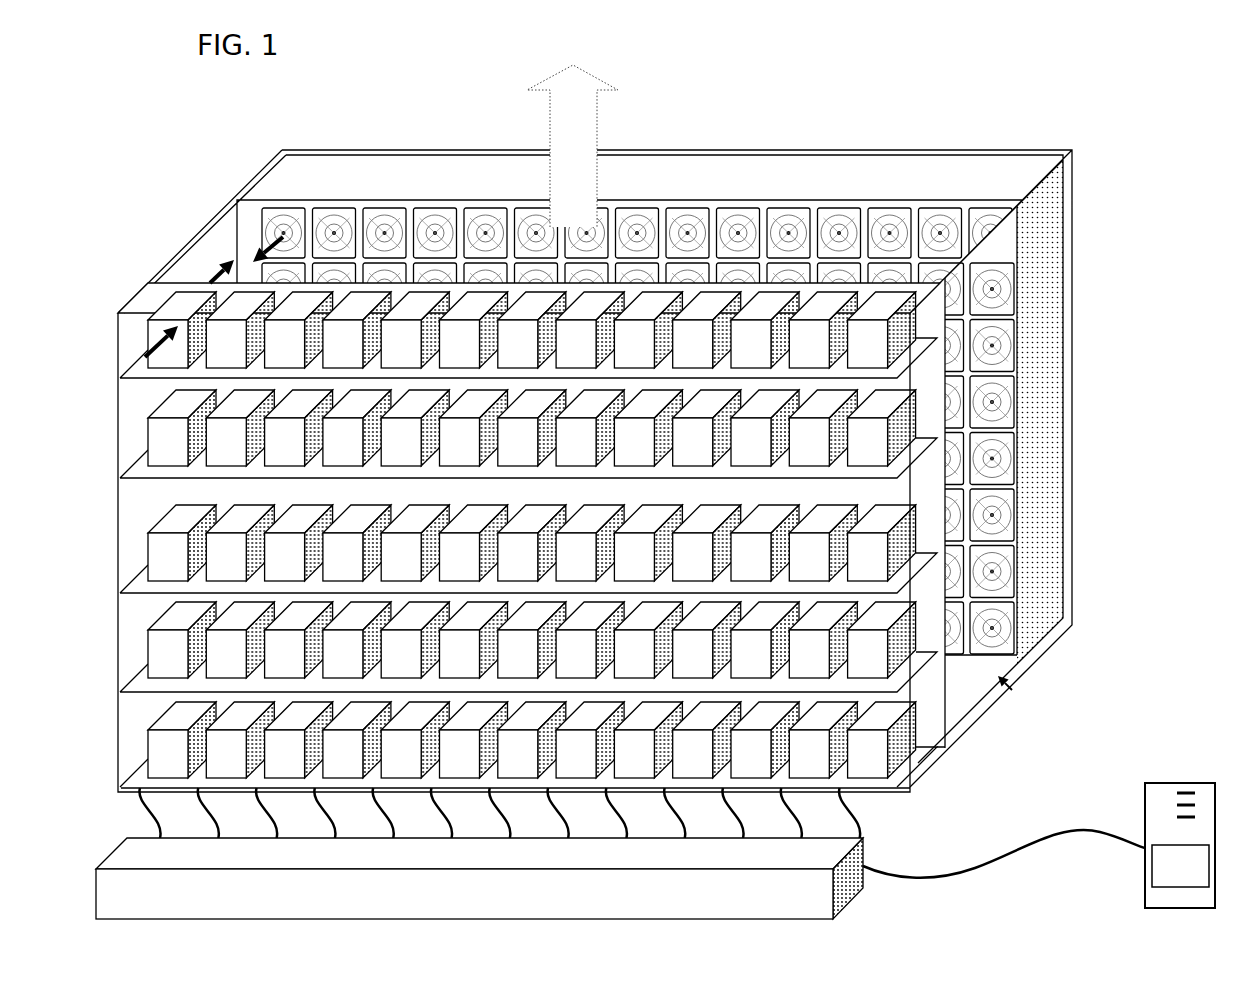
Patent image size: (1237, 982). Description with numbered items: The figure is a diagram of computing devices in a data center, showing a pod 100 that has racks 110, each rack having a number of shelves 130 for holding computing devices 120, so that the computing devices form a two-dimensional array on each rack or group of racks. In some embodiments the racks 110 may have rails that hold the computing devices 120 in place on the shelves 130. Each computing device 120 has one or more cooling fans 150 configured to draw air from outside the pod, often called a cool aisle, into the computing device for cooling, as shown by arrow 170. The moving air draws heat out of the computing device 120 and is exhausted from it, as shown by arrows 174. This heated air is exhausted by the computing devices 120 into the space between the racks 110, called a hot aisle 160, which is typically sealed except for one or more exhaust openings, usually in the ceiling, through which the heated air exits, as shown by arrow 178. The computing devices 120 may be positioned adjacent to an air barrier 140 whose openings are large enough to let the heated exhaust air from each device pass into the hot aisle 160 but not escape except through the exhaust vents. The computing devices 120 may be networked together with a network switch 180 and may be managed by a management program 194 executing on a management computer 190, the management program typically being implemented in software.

The pod 100 is at (1068, 116).
The rack 110 is at (1012, 400).
The computing device 120 is at (564, 468).
The shelf 130 is at (118, 603).
The air barrier 140 is at (972, 658).
The cooling fan 150 is at (256, 244).
The hot aisle 160 is at (1014, 690).
The arrow 170 is at (140, 362).
The arrows 174 is at (216, 276).
The arrow 178 is at (572, 146).
The network switch 180 is at (490, 905).
The management computer 190 is at (1148, 868).
The management program 194 is at (1180, 866).